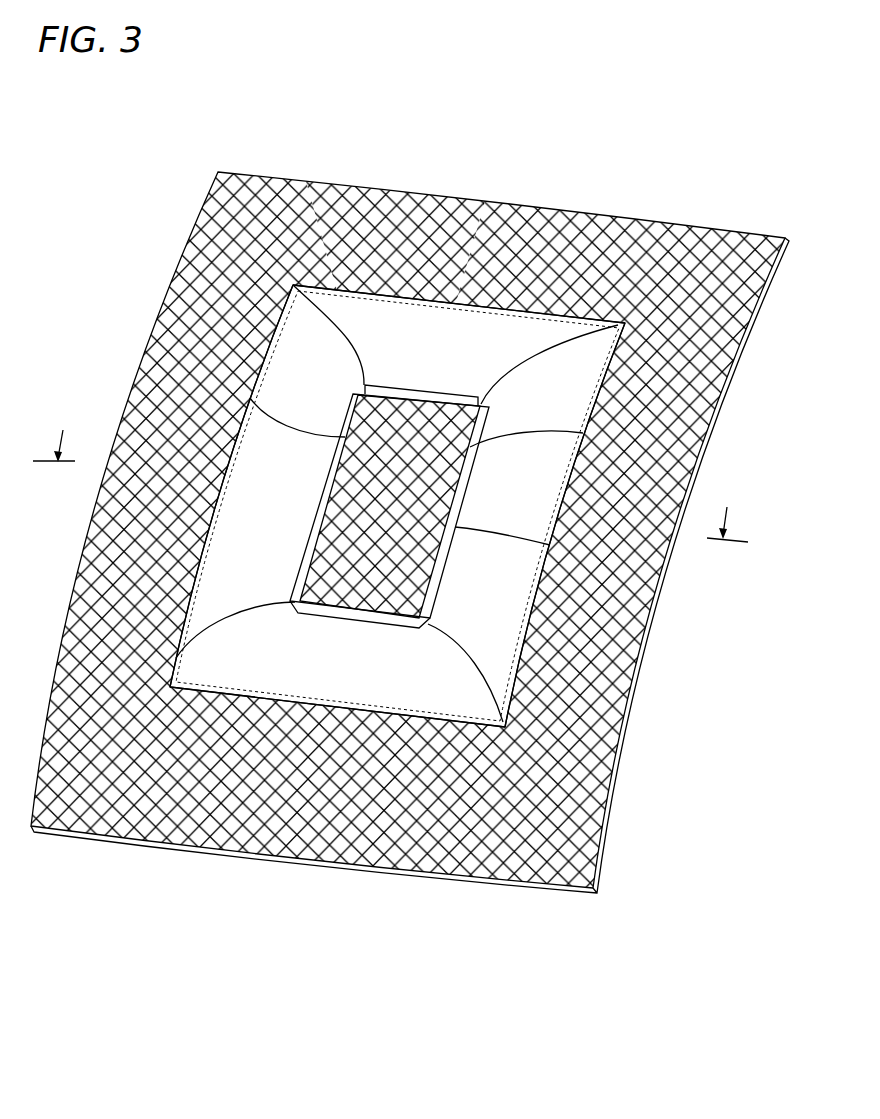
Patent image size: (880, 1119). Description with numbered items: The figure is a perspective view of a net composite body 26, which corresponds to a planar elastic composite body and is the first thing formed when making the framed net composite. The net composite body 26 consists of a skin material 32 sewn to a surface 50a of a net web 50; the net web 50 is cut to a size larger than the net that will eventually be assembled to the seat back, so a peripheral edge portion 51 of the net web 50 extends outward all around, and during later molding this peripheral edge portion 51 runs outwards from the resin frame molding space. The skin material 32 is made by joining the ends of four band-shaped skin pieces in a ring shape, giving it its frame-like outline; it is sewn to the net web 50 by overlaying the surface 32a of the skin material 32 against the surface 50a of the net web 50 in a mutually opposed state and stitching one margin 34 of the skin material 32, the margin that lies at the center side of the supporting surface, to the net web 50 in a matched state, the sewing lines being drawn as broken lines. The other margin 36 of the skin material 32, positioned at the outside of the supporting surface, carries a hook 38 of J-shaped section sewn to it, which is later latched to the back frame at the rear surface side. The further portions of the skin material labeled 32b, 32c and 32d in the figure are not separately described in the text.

The net composite body 26 is at (148, 240).
The skin material 32 is at (493, 640).
The surface of the skin material 32a is at (439, 338).
The second side of frame portion 32b is at (603, 723).
The third side of frame portion 32c is at (380, 672).
The fourth side of frame portion 32d is at (232, 550).
The one margin of the skin material 34 is at (500, 611).
The another margin of the skin material 36 is at (550, 545).
The hook 38 is at (466, 398).
The net web 50 is at (516, 836).
The surface of the net web 50a is at (660, 270).
The peripheral edge portion of the net web 51 is at (363, 186).